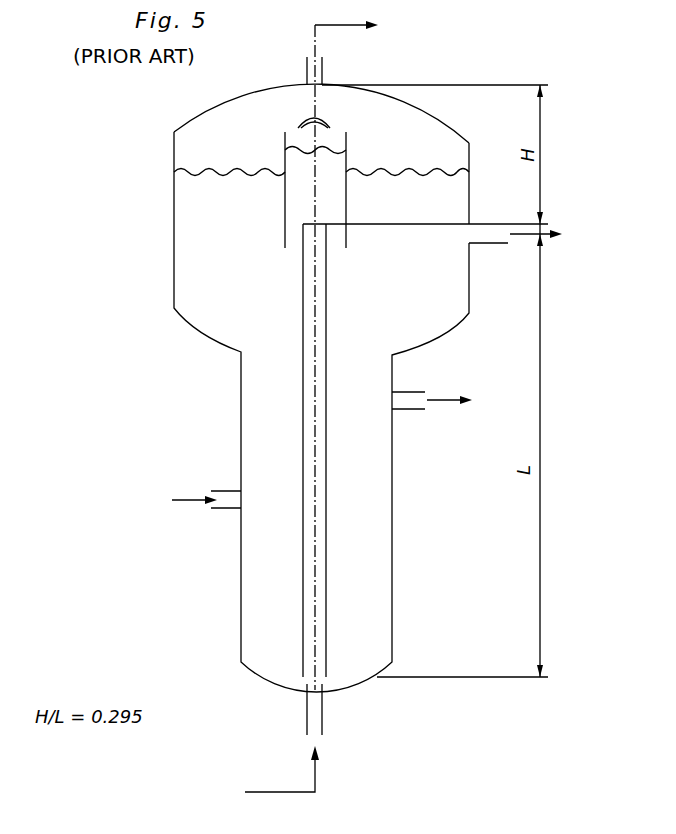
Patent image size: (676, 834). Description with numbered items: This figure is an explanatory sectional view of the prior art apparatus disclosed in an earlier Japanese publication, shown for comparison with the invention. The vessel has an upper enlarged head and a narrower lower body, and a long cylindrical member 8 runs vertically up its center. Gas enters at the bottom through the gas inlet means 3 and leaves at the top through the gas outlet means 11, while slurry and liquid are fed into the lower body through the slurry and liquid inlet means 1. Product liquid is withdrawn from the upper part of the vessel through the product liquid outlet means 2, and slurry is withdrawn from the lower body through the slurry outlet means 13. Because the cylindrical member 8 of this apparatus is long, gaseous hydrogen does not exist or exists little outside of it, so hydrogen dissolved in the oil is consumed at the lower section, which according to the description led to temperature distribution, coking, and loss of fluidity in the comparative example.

The gas outlet means 11 is at (322, 72).
The product liquid outlet means 2 is at (488, 240).
The slurry outlet means 13 is at (415, 403).
The cylindrical member 8 is at (303, 402).
The slurry and liquid inlet means 1 is at (219, 516).
The gas inlet means 3 is at (305, 718).